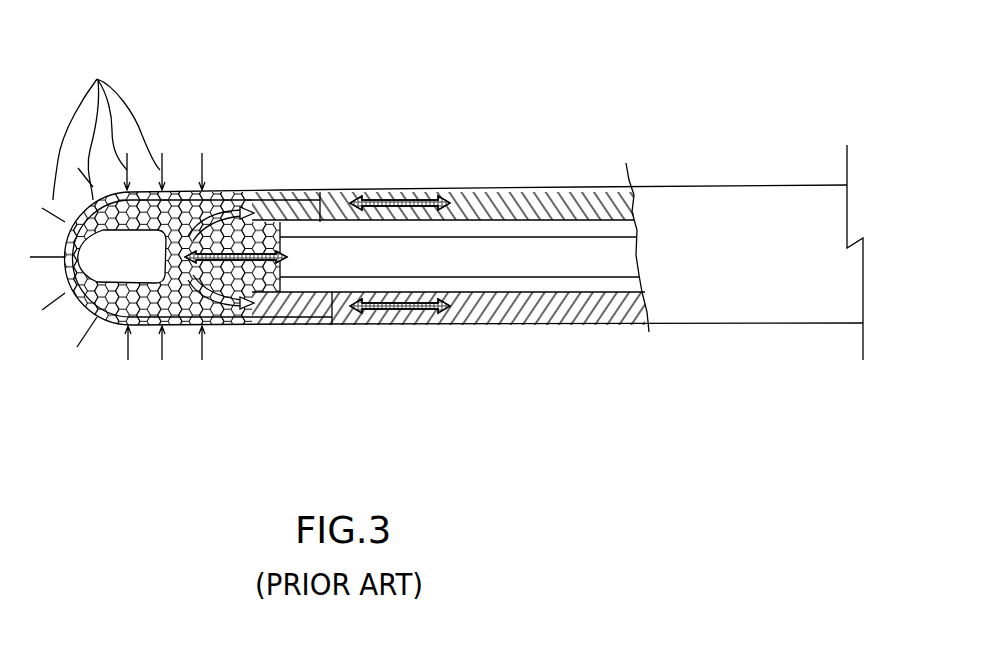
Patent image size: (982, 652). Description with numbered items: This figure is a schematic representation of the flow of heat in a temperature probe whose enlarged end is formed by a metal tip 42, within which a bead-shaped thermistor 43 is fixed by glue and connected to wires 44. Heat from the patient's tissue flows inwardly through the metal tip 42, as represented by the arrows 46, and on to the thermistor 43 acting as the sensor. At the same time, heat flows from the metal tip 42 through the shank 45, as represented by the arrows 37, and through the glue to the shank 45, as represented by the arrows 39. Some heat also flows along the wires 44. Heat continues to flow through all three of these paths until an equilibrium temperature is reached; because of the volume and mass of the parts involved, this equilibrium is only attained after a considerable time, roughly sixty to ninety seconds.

The arrows 37 is at (407, 203).
The arrows 39 is at (247, 295).
The metal tip 42 is at (233, 217).
The thermistor 43 is at (123, 256).
The wires 44 is at (312, 236).
The shank 45 is at (538, 190).
The arrows 46 is at (97, 79).